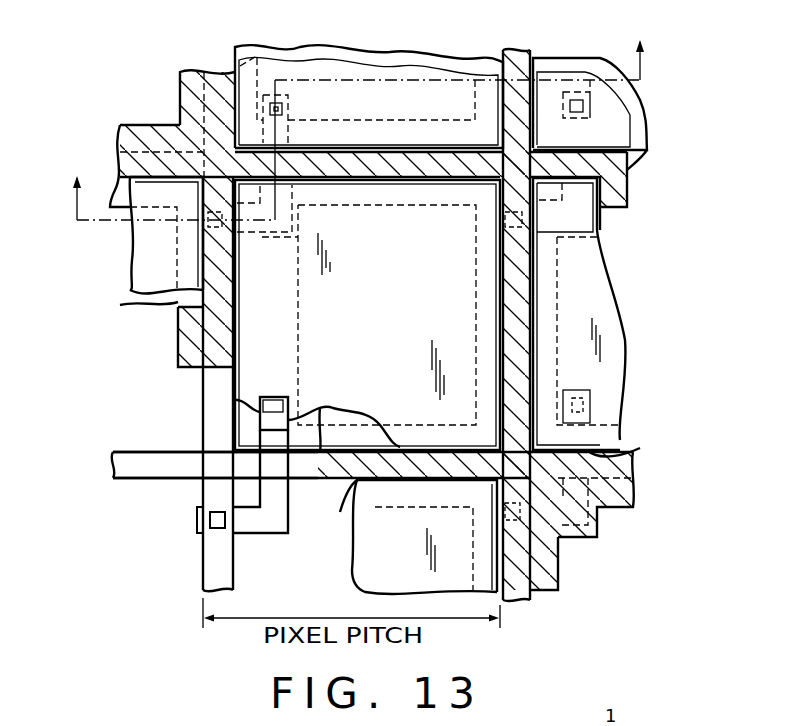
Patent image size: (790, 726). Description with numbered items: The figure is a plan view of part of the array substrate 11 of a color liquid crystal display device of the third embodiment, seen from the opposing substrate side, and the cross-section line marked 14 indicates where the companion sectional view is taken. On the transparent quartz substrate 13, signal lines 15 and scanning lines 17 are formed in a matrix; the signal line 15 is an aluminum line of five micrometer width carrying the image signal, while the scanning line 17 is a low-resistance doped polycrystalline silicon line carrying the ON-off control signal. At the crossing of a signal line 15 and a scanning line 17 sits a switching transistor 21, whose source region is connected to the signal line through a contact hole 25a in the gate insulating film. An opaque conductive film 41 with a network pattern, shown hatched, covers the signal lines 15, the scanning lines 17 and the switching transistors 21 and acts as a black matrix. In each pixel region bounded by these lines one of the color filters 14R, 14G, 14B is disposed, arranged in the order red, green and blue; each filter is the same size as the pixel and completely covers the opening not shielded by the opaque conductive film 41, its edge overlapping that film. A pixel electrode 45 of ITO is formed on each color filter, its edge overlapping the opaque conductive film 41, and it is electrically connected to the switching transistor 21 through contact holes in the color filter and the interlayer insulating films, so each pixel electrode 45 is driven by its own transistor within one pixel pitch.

The array substrate 11 is at (647, 352).
The substrate 13 is at (282, 552).
The section line 14- 14 is at (359, 129).
The red color filter 14R is at (137, 258).
The green color filter 14G is at (235, 62).
The blue color filter 14B is at (645, 132).
The signal line 15 is at (210, 492).
The scanning line 17 is at (133, 457).
The switching transistor 21 is at (252, 543).
The contact hole 25a is at (197, 516).
The opaque conductive film 41 is at (177, 340).
The pixel electrode 45 is at (154, 275).